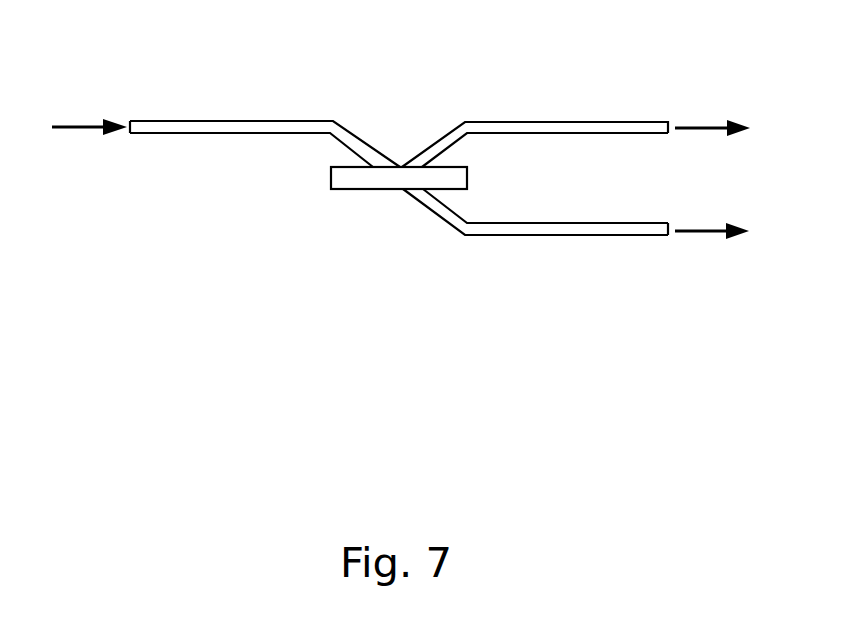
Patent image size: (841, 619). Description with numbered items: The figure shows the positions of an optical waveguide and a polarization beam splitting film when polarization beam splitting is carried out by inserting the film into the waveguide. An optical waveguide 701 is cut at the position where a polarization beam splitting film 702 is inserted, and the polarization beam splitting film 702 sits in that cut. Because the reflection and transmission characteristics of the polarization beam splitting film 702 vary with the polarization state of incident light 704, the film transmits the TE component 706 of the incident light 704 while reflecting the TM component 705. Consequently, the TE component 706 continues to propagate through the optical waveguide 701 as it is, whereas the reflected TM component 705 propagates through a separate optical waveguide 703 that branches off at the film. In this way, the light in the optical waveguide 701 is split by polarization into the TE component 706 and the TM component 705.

The optical waveguide 701 is at (257, 121).
The polarization beam splitting film 702 is at (345, 189).
The optical waveguide 703 is at (557, 121).
The incident light 704 is at (80, 127).
The TM component 705 is at (702, 127).
The TE component 706 is at (702, 232).